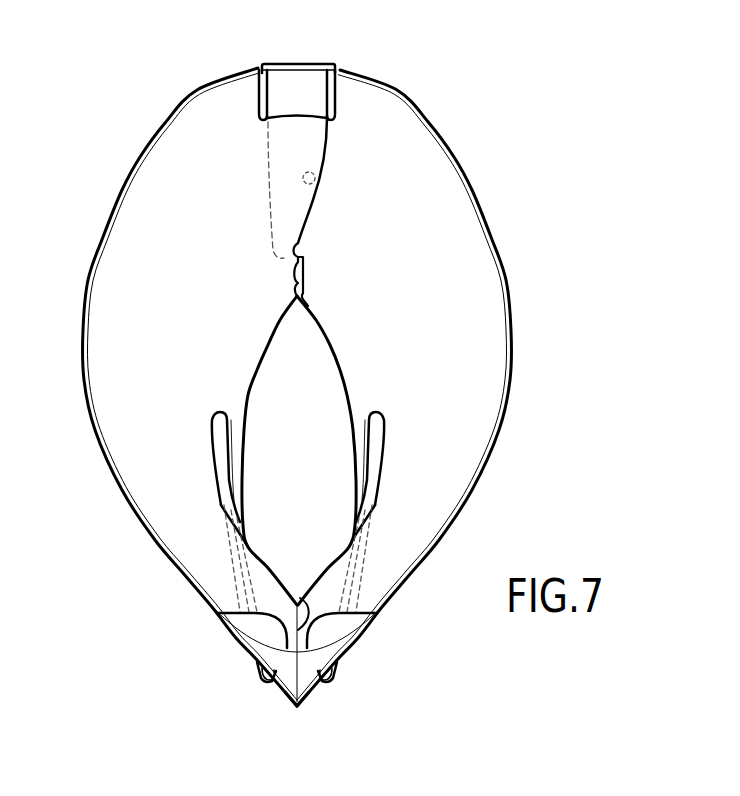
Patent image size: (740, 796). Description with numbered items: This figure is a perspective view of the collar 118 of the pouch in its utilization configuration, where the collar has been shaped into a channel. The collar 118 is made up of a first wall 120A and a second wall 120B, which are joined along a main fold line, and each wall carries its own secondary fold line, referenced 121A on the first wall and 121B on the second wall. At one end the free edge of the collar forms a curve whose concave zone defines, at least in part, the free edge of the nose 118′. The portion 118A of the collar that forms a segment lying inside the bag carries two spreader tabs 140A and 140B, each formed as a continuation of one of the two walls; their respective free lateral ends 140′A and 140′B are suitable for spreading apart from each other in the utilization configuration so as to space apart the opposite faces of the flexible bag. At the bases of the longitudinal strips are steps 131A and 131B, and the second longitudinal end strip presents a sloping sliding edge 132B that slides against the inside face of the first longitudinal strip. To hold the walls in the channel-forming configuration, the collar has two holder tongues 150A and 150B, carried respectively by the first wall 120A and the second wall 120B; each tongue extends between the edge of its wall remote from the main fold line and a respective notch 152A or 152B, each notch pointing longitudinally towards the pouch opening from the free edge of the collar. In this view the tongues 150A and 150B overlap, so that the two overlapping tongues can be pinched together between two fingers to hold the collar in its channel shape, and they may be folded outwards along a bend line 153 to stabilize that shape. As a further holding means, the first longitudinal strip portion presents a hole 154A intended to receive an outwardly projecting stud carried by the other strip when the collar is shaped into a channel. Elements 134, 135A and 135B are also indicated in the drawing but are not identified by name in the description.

The collar 118 is at (122, 148).
The nose 118′ is at (303, 704).
The portion of the collar inside the bag 118A is at (370, 367).
The first wall 120A is at (447, 382).
The second wall 120B is at (162, 377).
The secondary fold line 121A is at (377, 613).
The secondary fold line 121B is at (217, 613).
The step 131A is at (293, 268).
The step 131B is at (303, 249).
The sliding edge 132B is at (310, 218).
The lower connector 134 is at (307, 600).
The right loop 135A is at (305, 293).
The left loop 135B is at (292, 287).
The spreader tab 140A is at (338, 665).
The spreader tab 140B is at (256, 665).
The free lateral end 140′A is at (327, 687).
The free lateral end 140′B is at (272, 683).
The holder tongue 150A is at (308, 63).
The holder tongue 150B is at (280, 87).
The notch 152A is at (340, 105).
The notch 152B is at (260, 107).
The bend line 153 is at (295, 122).
The hole 154A is at (316, 178).